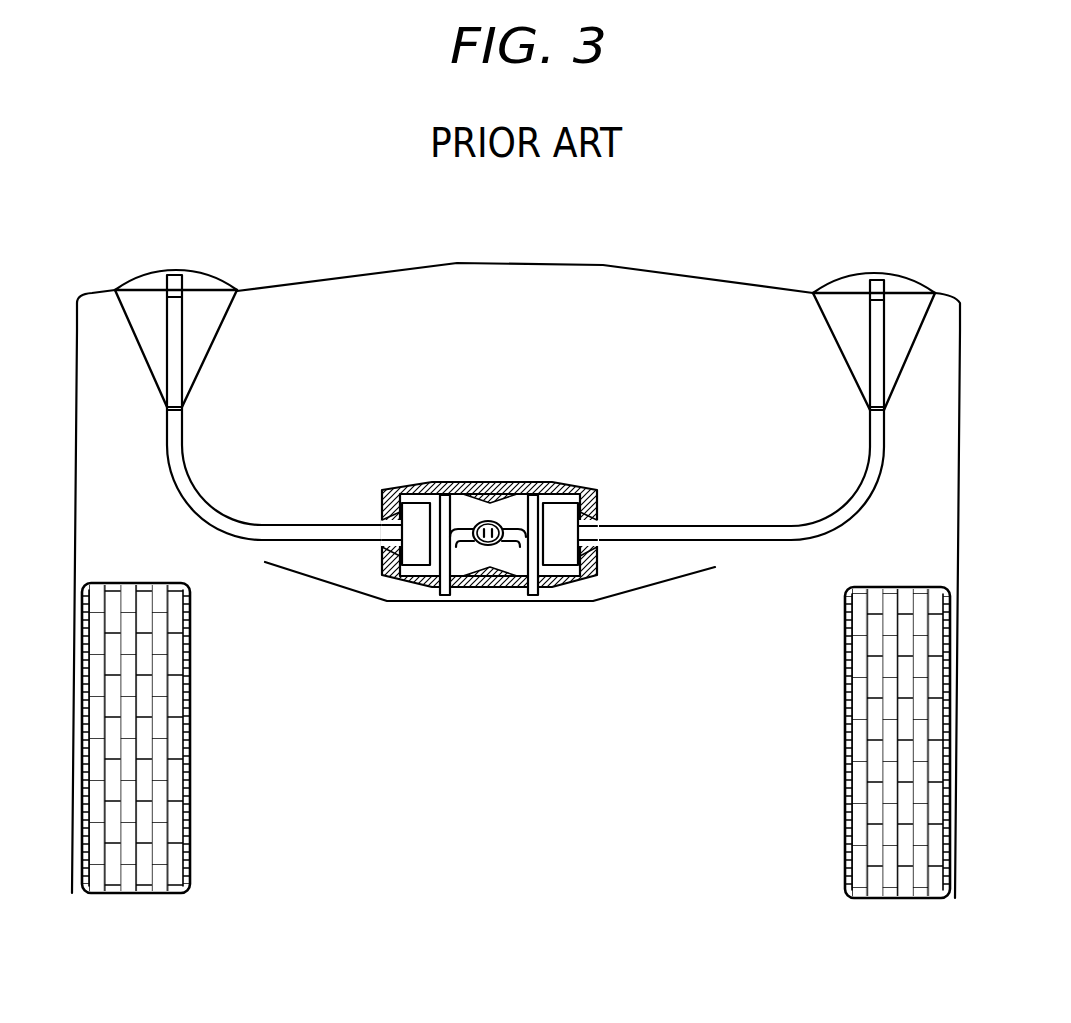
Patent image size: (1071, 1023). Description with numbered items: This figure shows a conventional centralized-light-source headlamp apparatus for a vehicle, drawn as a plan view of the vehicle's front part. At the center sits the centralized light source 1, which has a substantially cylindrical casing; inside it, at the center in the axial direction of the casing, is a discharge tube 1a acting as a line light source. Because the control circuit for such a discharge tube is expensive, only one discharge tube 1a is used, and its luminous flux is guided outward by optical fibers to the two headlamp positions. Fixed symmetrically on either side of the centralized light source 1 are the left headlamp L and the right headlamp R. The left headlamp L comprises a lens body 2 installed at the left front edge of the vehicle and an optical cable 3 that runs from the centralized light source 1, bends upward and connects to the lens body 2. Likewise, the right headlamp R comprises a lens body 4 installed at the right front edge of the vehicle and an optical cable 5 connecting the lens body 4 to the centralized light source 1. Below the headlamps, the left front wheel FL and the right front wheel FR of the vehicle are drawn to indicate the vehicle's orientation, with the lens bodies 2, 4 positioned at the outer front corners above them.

The centralized light source 1 is at (568, 436).
The discharge tube 1a is at (488, 548).
The lens body 2 is at (215, 305).
The optical cable 3 is at (222, 503).
The lens body 4 is at (838, 312).
The optical cable 5 is at (840, 497).
The left headlamp L is at (230, 267).
The right headlamp R is at (832, 271).
The left front wheel FL is at (190, 773).
The right front wheel FR is at (845, 778).